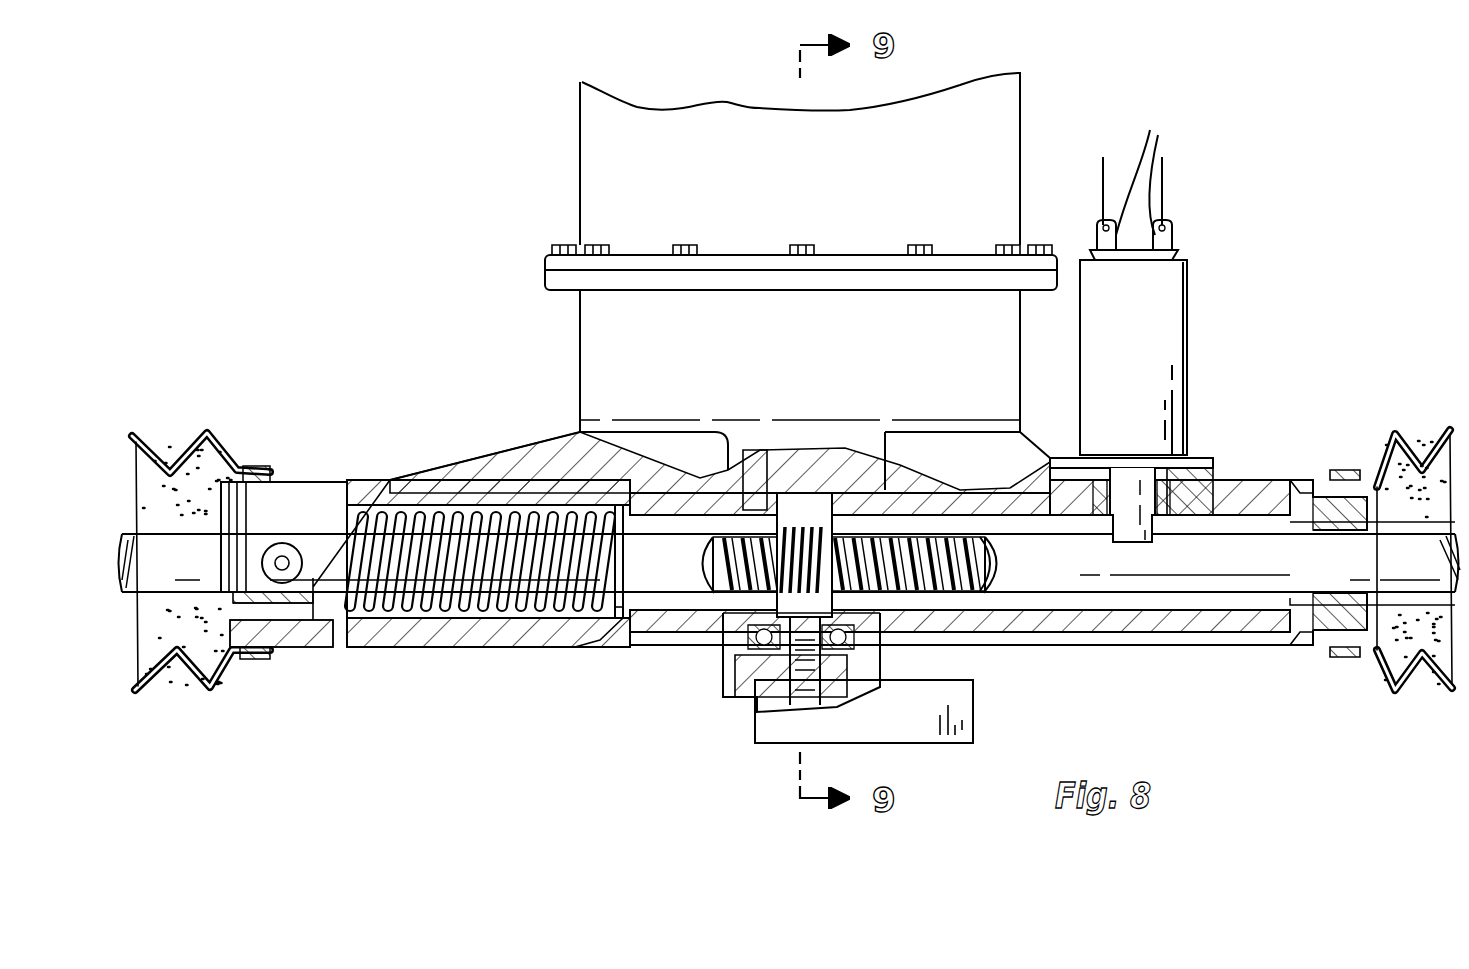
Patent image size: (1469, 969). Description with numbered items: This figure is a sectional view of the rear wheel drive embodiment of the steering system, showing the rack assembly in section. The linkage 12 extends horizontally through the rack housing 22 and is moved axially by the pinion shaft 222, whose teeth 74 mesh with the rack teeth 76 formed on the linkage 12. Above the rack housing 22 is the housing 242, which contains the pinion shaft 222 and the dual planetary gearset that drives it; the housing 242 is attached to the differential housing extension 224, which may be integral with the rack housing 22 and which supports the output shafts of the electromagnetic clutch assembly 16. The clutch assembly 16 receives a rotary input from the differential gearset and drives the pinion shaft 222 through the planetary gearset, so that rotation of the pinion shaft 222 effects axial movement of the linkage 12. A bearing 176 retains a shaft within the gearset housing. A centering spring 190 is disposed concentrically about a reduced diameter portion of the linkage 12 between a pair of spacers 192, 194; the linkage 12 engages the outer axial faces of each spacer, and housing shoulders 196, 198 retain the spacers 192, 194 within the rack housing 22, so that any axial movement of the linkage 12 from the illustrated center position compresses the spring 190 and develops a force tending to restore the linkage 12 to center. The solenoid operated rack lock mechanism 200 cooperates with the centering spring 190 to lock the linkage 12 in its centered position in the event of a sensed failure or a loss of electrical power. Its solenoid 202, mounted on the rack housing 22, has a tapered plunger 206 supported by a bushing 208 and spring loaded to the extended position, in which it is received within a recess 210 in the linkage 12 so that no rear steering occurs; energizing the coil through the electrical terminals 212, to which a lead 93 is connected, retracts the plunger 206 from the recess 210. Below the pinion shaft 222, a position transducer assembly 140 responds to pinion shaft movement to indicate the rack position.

The linkage 12 is at (1218, 567).
The electromagnetic clutch assembly 16 is at (572, 128).
The rack housing 22 is at (1103, 618).
The teeth of pinion shaft 74 is at (835, 540).
The rack teeth 76 is at (978, 600).
The sensor lead wire 93 is at (1165, 185).
The position transducer assembly 140 is at (928, 748).
The bearing 176 is at (740, 645).
The centering spring 190 is at (440, 603).
The spacer 192 is at (333, 605).
The spacer 194 is at (596, 643).
The housing shoulder 196 is at (322, 620).
The housing shoulder 198 is at (628, 617).
The solenoid operated rack lock mechanism 200 is at (1171, 293).
The solenoid 202 is at (1170, 307).
The tapered plunger 206 is at (1127, 500).
The bushing 208 is at (1110, 510).
The recess 210 is at (1165, 525).
The electrical terminals 212 is at (1151, 171).
The pinion shaft 222 is at (790, 510).
The differential housing extension 224 is at (1003, 142).
The housing 242 is at (600, 360).